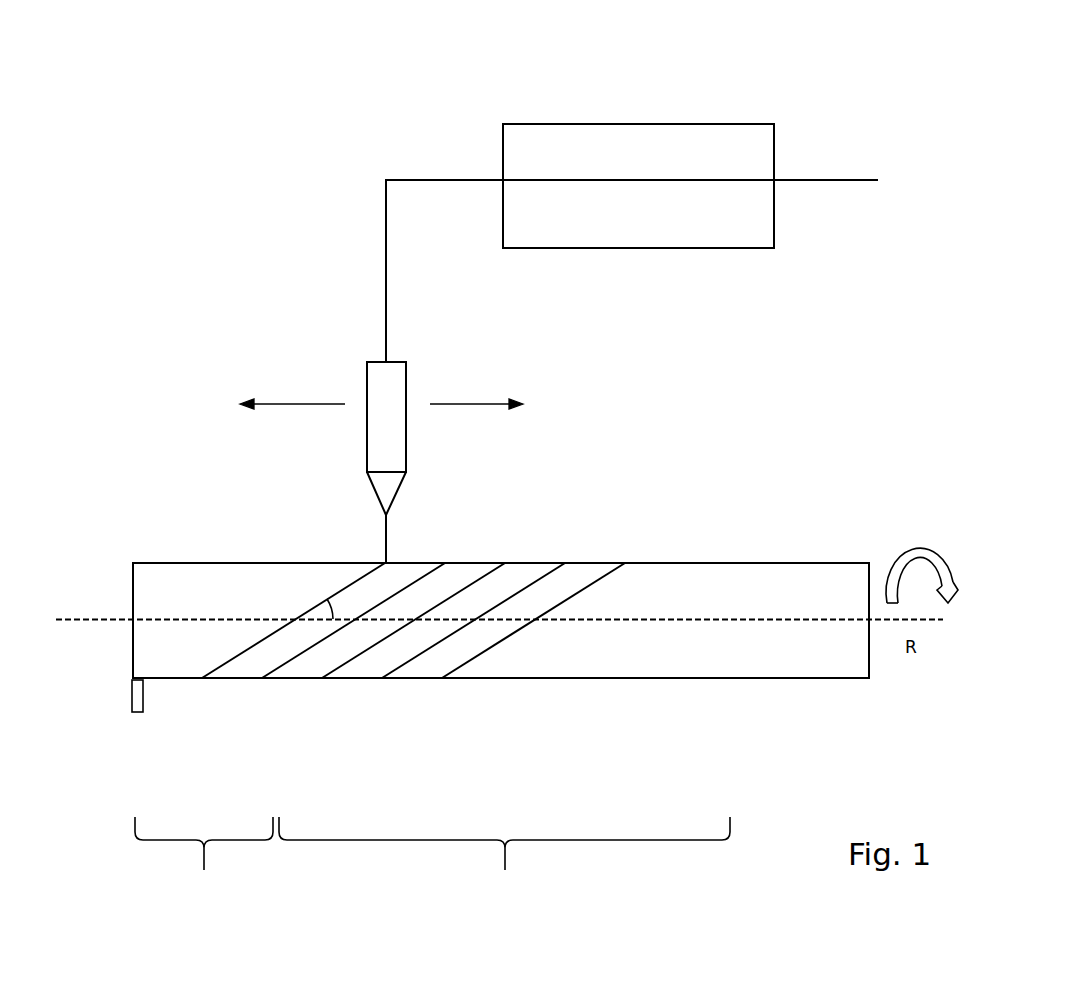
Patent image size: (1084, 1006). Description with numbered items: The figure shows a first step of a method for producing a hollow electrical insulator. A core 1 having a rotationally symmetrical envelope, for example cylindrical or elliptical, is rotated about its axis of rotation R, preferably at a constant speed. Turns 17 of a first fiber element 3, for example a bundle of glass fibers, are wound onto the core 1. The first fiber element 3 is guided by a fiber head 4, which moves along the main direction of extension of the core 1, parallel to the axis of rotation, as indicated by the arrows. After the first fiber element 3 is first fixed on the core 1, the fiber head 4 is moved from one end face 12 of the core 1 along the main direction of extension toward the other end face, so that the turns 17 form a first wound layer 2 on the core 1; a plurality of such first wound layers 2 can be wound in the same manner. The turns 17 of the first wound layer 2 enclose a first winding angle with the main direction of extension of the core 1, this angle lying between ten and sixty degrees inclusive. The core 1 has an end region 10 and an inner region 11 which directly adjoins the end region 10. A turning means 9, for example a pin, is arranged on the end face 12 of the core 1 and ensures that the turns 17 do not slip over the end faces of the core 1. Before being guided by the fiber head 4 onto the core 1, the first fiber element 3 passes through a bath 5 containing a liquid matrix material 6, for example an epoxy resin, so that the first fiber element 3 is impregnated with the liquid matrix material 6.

The core 1 is at (673, 663).
The first wound layer 2 is at (248, 663).
The first fiber element 3 is at (389, 547).
The fiber head 4 is at (397, 400).
The bath 5 is at (546, 150).
The liquid matrix material 6 is at (723, 145).
The turning means 9 is at (138, 712).
The end region 10 is at (204, 862).
The inner region 11 is at (504, 864).
The end face 12 is at (133, 592).
The turns 17 is at (358, 567).